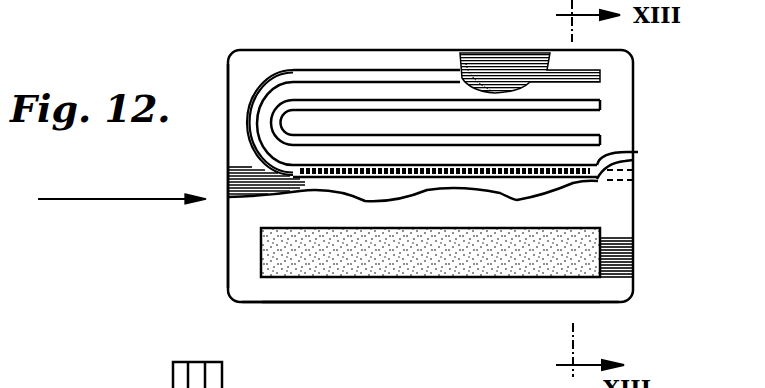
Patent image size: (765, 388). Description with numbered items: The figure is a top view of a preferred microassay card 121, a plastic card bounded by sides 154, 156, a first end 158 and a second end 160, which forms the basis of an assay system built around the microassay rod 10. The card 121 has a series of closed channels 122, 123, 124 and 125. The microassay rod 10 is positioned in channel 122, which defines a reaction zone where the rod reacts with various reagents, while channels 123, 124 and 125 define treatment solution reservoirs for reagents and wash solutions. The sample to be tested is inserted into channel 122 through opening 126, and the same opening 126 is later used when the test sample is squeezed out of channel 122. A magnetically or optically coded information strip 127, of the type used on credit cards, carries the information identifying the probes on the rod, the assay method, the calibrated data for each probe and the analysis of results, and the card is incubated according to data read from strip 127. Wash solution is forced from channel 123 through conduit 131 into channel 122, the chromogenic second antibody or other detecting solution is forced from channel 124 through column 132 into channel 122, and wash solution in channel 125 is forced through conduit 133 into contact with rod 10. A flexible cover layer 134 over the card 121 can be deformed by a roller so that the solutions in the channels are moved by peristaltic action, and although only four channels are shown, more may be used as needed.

The microassay rod 10 is at (442, 172).
The card 121 is at (228, 197).
The channel 122 is at (638, 152).
The channel 123 is at (590, 134).
The channel 124 is at (583, 105).
The channel 125 is at (563, 70).
The opening 126 is at (637, 190).
The information strip 127 is at (362, 252).
The conduit 131 is at (275, 156).
The column 132 is at (268, 118).
The conduit 133 is at (271, 82).
The cover layer 134 is at (492, 293).
The side 154 is at (383, 50).
The side 156 is at (427, 303).
The first end 158 is at (228, 276).
The second end 160 is at (635, 262).